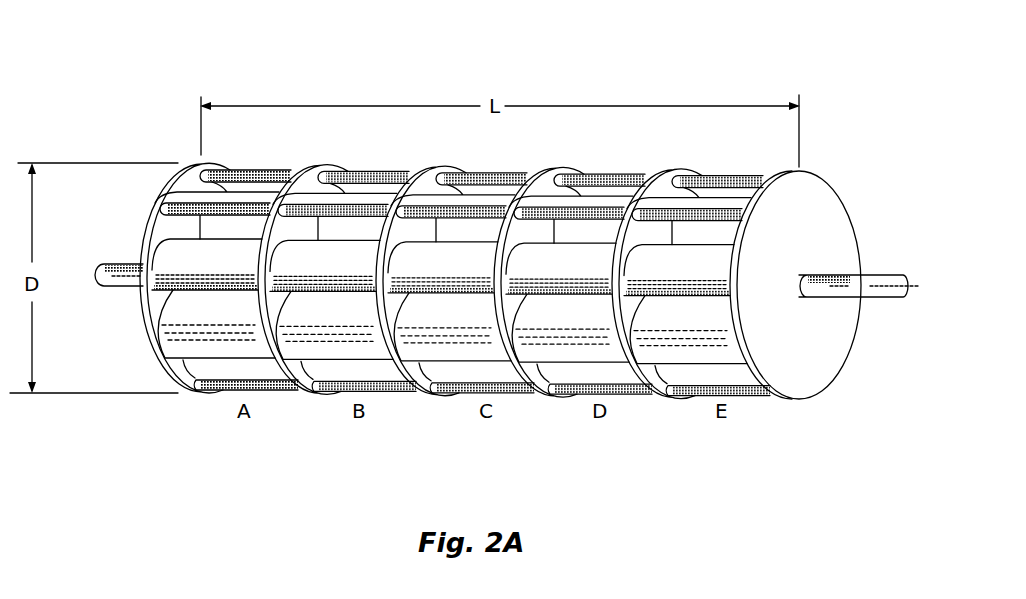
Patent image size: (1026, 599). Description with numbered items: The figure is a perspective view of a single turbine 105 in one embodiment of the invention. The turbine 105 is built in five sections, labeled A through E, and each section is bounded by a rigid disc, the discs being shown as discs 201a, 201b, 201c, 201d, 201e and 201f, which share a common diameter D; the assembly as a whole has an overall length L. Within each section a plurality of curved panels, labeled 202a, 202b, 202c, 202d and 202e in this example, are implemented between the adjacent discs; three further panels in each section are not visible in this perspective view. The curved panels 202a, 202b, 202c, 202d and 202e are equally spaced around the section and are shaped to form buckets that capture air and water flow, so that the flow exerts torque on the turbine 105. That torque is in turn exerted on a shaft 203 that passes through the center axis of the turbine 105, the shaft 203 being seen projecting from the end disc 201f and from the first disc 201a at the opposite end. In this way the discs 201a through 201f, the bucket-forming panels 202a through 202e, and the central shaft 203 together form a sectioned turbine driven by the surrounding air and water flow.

The turbine 105 is at (592, 85).
The rigid disc 201a is at (196, 162).
The rigid disc 201b is at (330, 161).
The rigid disc 201c is at (440, 163).
The rigid disc 201d is at (561, 166).
The rigid disc 201e is at (684, 167).
The rigid disc 201f is at (794, 167).
The curved panel 202a is at (247, 167).
The curved panel 202b is at (152, 201).
The curved panel 202c is at (232, 268).
The curved panel 202d is at (180, 314).
The curved panel 202e is at (213, 371).
The shaft 203 is at (106, 287).